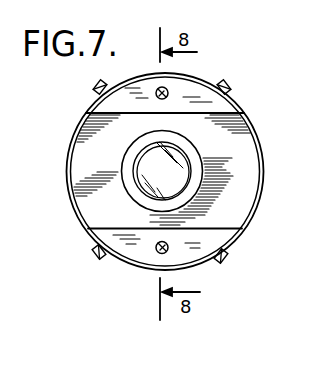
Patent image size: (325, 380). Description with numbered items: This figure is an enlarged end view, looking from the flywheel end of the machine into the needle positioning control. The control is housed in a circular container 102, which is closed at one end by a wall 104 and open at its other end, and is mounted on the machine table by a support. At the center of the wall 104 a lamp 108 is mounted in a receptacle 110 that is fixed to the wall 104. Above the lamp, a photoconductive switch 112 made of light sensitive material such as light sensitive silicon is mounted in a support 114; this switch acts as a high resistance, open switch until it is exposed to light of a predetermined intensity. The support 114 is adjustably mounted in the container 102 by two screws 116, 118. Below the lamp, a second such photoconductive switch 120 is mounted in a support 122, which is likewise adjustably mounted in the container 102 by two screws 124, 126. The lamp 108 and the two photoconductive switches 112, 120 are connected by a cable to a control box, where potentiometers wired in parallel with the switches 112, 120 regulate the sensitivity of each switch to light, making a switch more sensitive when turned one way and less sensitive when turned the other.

The container 102 is at (263, 163).
The wall 104 is at (83, 208).
The lamp 108 is at (146, 162).
The receptacle 110 is at (196, 150).
The photoconductive switch 112 is at (166, 89).
The support 114 is at (232, 108).
The screw 116 is at (97, 86).
The screw 118 is at (229, 88).
The second photoconductive switch 120 is at (158, 252).
The support 122 is at (228, 238).
The screw 124 is at (101, 259).
The screw 126 is at (222, 262).